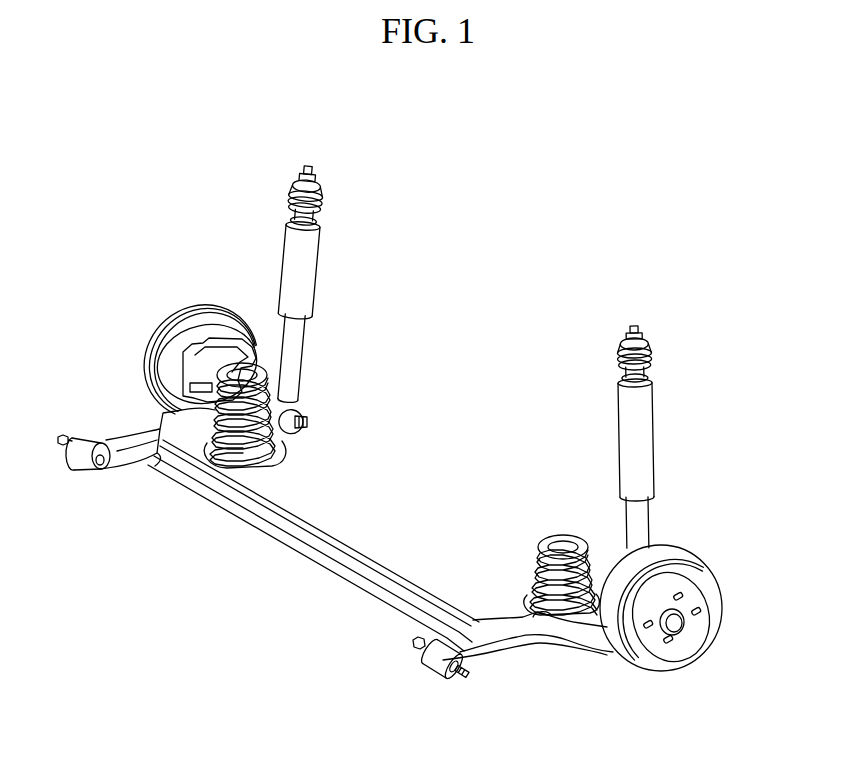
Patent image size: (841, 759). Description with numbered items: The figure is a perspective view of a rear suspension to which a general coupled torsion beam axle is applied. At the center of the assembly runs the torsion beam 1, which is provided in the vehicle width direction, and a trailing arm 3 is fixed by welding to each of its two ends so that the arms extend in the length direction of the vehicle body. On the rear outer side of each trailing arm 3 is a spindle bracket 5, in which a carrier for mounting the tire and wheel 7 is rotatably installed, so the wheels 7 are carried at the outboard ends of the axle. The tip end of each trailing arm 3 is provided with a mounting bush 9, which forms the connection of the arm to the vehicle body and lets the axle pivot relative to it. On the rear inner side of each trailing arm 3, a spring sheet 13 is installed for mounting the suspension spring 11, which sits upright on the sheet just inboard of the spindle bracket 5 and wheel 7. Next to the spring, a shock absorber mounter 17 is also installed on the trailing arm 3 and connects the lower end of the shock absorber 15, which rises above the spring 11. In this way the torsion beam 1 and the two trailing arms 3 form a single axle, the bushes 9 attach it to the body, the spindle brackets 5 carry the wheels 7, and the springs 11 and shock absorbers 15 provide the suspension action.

The torsion beam 1 is at (300, 548).
The trailing arm 3 is at (137, 487).
The spindle bracket 5 is at (192, 348).
The wheel 7 is at (204, 307).
The mounting bush 9 is at (85, 440).
The suspension spring 11 is at (275, 377).
The spring sheet 13 is at (298, 445).
The shock absorber 15 is at (298, 247).
The shock absorber mounter 17 is at (308, 422).